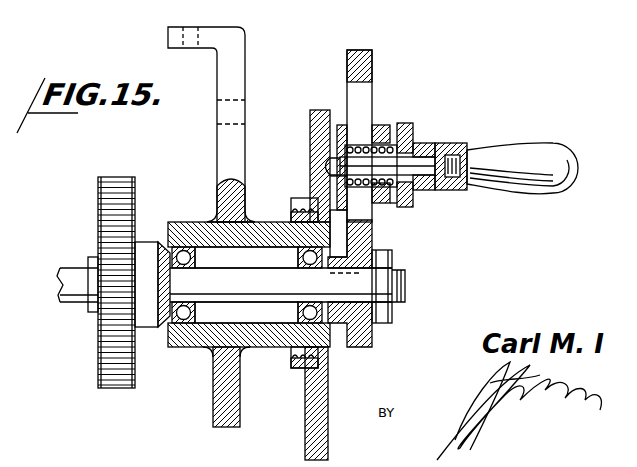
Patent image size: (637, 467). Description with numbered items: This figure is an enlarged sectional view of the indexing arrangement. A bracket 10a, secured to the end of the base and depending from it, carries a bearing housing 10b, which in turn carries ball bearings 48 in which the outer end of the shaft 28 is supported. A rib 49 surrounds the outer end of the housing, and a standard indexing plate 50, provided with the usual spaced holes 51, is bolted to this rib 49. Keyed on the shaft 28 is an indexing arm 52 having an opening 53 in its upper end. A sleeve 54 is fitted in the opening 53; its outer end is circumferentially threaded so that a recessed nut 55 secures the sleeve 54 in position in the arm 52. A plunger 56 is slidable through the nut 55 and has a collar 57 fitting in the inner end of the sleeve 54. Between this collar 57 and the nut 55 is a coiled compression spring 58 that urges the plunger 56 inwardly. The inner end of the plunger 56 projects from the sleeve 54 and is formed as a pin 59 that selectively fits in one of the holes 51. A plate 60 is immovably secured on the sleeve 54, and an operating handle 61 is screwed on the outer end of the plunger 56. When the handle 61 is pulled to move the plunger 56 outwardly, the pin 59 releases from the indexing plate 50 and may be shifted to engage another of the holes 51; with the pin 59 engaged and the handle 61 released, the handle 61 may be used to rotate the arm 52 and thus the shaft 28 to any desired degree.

The bracket 10a is at (233, 70).
The bearing housing 10b is at (188, 204).
The shaft 28 is at (77, 290).
The ball bearings 48 is at (183, 319).
The rib 49 is at (292, 377).
The indexing plate 50 is at (323, 385).
The spaced holes 51 is at (318, 166).
The indexing arm 52 is at (373, 240).
The opening 53 is at (363, 97).
The sleeve 54 is at (358, 143).
The recessed nut 55 is at (425, 140).
The plunger 56 is at (428, 153).
The collar 57 is at (317, 145).
The coiled compression spring 58 is at (396, 198).
The pin 59 is at (317, 179).
The plate 60 is at (347, 123).
The operating handle 61 is at (513, 150).